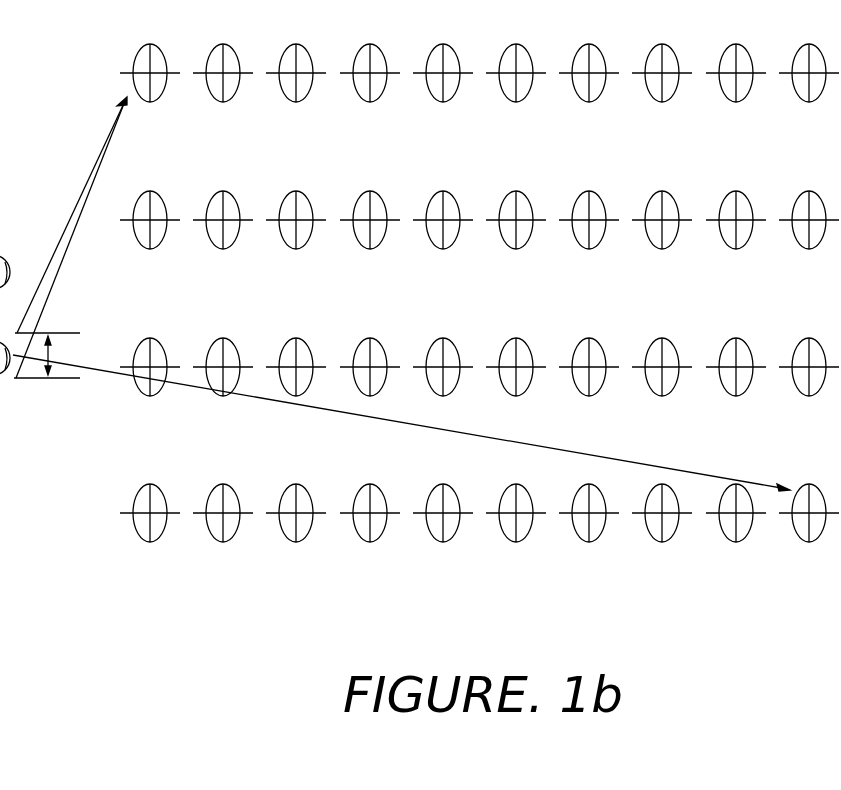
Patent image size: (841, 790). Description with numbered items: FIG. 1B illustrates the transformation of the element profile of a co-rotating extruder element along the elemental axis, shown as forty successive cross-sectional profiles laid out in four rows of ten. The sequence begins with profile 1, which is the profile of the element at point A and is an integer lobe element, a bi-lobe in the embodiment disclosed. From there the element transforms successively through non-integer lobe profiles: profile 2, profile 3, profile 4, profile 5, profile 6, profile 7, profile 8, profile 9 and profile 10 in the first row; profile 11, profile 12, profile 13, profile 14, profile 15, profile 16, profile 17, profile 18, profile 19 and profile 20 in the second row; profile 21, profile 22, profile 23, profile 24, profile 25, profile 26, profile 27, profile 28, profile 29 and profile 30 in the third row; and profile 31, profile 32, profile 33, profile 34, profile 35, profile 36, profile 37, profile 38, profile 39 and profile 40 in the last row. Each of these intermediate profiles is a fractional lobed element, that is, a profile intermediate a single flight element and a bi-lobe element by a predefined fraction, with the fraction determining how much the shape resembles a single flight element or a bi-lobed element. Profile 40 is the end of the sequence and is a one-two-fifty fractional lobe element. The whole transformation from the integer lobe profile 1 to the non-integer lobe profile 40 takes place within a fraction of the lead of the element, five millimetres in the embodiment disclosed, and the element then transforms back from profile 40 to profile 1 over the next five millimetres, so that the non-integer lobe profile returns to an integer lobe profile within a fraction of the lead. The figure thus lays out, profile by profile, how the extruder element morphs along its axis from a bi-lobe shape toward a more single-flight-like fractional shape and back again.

The profile 1 is at (150, 85).
The profile 2 is at (223, 85).
The profile 3 is at (296, 85).
The profile 4 is at (370, 85).
The profile 5 is at (443, 85).
The profile 6 is at (516, 85).
The profile 7 is at (589, 85).
The profile 8 is at (662, 85).
The profile 9 is at (736, 85).
The profile 10 is at (426, 211).
The profile 11 is at (150, 232).
The profile 12 is at (223, 232).
The profile 13 is at (296, 232).
The profile 14 is at (370, 232).
The profile 15 is at (443, 232).
The profile 16 is at (516, 232).
The profile 17 is at (589, 232).
The profile 18 is at (662, 232).
The profile 19 is at (736, 232).
The profile 20 is at (809, 232).
The profile 21 is at (150, 379).
The profile 22 is at (223, 379).
The profile 23 is at (296, 379).
The profile 24 is at (370, 379).
The profile 25 is at (443, 379).
The profile 26 is at (516, 379).
The profile 27 is at (589, 379).
The profile 28 is at (662, 379).
The profile 29 is at (736, 379).
The profile 30 is at (809, 379).
The profile 31 is at (150, 525).
The profile 32 is at (223, 525).
The profile 33 is at (296, 525).
The profile 34 is at (370, 525).
The profile 35 is at (443, 525).
The profile 36 is at (516, 525).
The profile 37 is at (589, 525).
The profile 38 is at (662, 525).
The profile 39 is at (736, 525).
The profile 40 is at (809, 525).